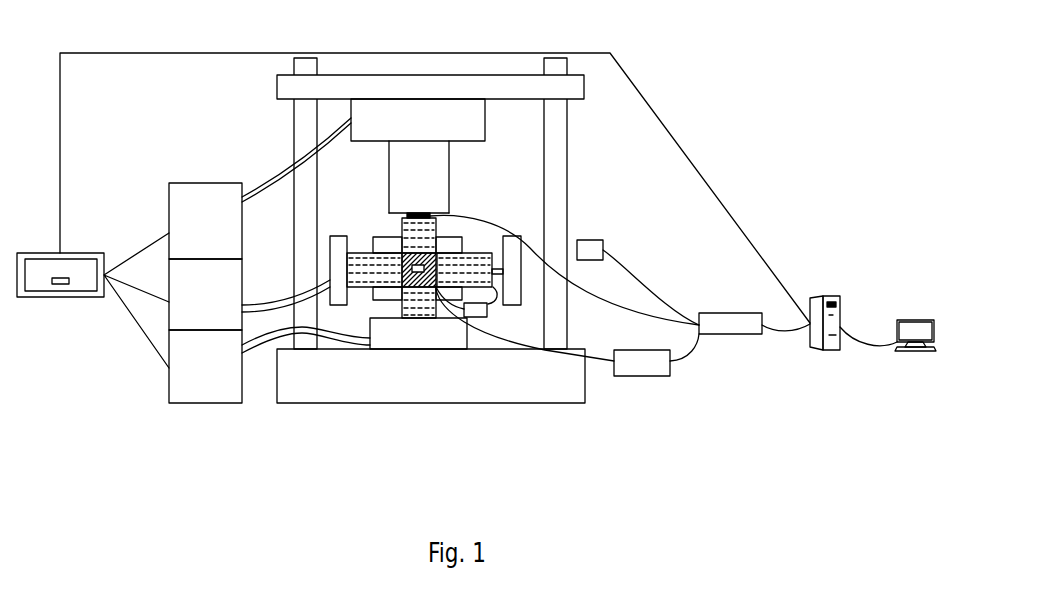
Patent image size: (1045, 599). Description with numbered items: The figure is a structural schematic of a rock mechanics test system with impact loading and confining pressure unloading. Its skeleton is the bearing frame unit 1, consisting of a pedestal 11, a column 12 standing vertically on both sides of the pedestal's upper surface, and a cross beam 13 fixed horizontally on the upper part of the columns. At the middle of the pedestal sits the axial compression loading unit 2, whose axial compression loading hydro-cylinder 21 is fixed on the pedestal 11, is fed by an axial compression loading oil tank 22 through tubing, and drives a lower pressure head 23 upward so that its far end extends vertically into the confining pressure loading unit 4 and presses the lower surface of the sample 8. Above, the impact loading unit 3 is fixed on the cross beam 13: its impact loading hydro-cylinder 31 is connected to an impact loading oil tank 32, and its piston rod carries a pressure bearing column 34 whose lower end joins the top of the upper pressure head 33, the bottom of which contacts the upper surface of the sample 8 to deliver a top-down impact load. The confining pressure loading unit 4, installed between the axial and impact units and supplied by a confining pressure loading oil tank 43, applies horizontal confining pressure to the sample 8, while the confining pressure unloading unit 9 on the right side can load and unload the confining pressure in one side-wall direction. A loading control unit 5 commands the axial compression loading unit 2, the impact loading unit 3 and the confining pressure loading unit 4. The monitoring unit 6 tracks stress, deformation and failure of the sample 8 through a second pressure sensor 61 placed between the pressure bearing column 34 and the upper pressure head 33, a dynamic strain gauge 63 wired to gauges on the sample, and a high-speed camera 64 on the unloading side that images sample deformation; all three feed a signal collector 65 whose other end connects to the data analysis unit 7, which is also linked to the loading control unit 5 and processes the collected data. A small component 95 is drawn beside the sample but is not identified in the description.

The bearing frame unit 1 is at (407, 254).
The pedestal 11 is at (347, 383).
The column 12 is at (303, 126).
The cross beam 13 is at (288, 90).
The axial compression loading unit 2 is at (412, 340).
The axial compression loading hydro-cylinder 21 is at (457, 337).
The lower pressure head 23 is at (426, 280).
The impact loading unit 3 is at (413, 110).
The impact loading hydro-cylinder 31 is at (367, 108).
The upper pressure head 33 is at (417, 213).
The pressure bearing column 34 is at (437, 162).
The confining pressure loading unit 4 is at (462, 237).
The loading control unit 5 is at (69, 298).
The monitoring unit 6 is at (671, 320).
The second pressure sensor 61 is at (429, 214).
The dynamic strain gauge 63 is at (638, 363).
The high-speed camera 64 is at (593, 248).
The signal collector 65 is at (713, 322).
The data analysis unit 7 is at (823, 297).
The sample 8 is at (408, 258).
The confining pressure unloading unit 9 is at (508, 265).
The temperature sensor 95 is at (483, 310).
The axial compression loading oil tank 22 is at (213, 383).
The impact loading oil tank 32 is at (195, 197).
The confining pressure loading oil tank 43 is at (196, 283).